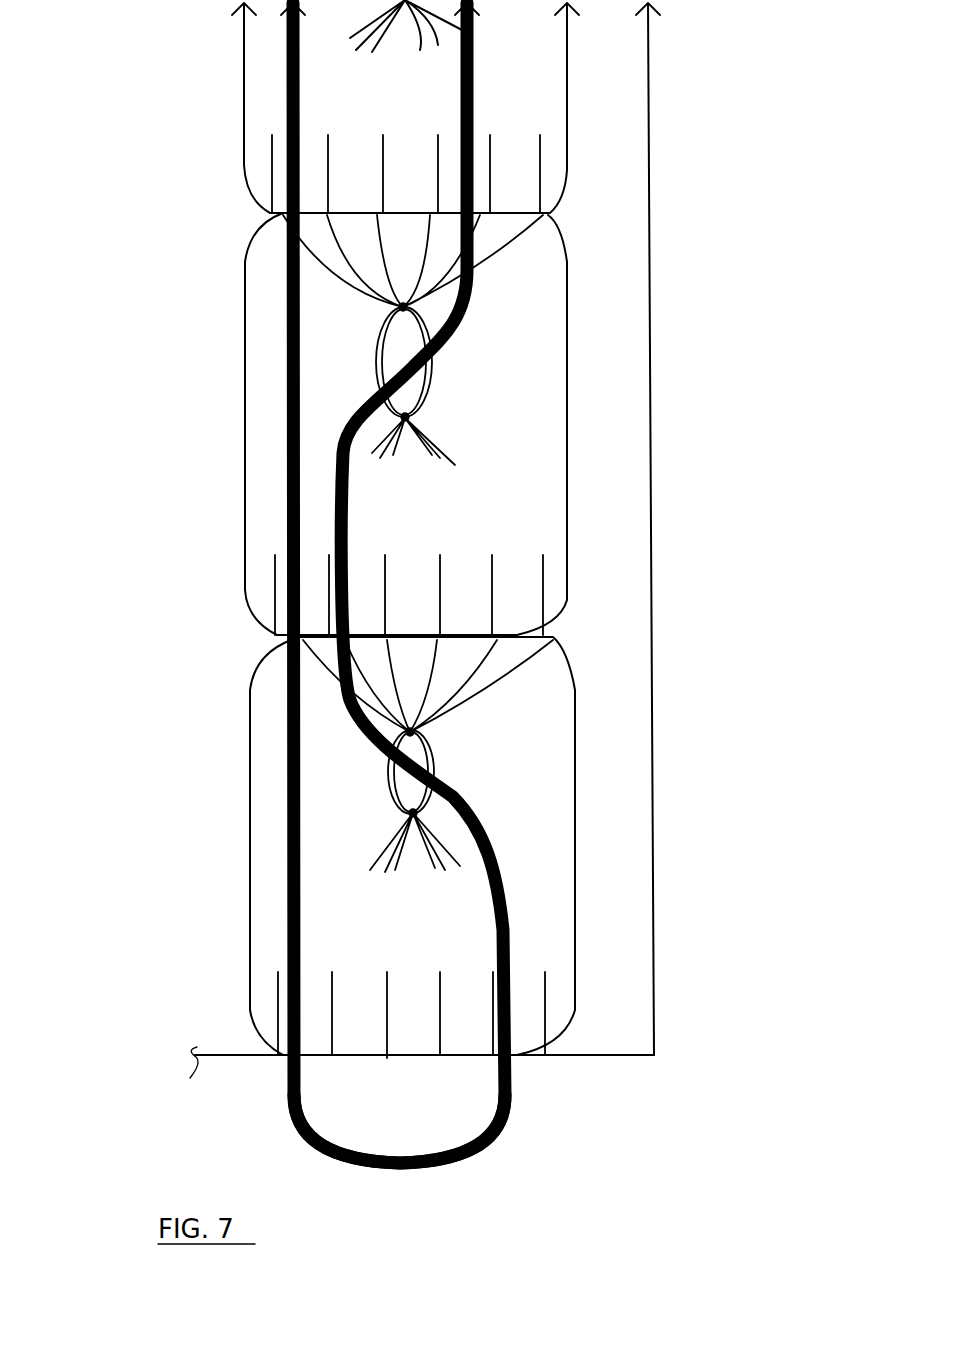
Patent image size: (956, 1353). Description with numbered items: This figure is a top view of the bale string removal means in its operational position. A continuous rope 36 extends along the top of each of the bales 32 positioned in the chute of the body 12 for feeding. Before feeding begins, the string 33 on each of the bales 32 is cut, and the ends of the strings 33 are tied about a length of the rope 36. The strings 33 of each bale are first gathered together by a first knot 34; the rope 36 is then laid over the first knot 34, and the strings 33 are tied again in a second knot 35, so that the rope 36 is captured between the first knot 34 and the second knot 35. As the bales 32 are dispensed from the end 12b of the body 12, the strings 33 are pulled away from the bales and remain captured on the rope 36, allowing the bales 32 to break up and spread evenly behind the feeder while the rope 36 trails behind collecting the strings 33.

The body 12 is at (637, 818).
The end of the body 12b is at (610, 1055).
The bale 32 is at (568, 113).
The string 33 is at (460, 452).
The first knot 34 is at (400, 312).
The second knot 35 is at (345, 423).
The rope 36 is at (513, 1100).